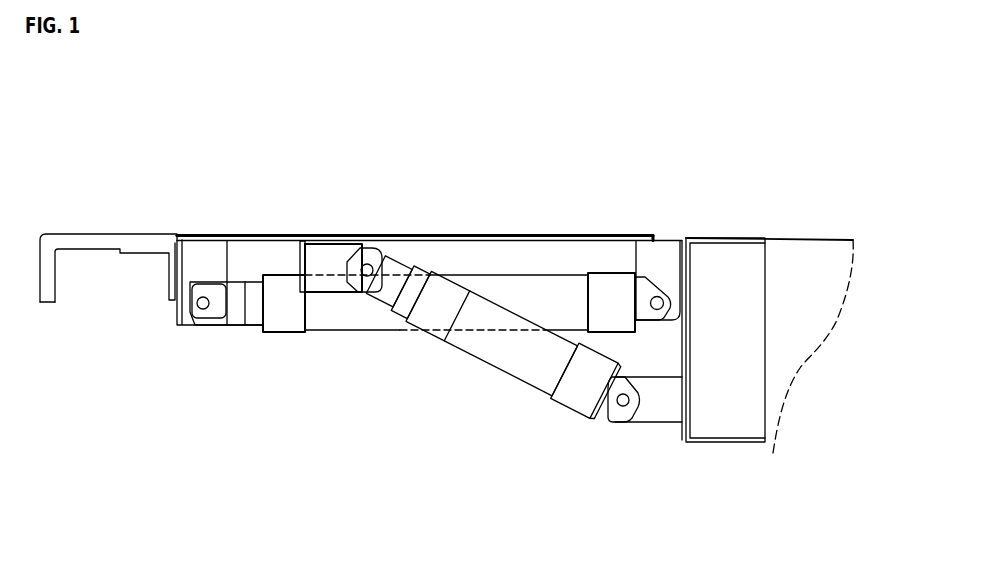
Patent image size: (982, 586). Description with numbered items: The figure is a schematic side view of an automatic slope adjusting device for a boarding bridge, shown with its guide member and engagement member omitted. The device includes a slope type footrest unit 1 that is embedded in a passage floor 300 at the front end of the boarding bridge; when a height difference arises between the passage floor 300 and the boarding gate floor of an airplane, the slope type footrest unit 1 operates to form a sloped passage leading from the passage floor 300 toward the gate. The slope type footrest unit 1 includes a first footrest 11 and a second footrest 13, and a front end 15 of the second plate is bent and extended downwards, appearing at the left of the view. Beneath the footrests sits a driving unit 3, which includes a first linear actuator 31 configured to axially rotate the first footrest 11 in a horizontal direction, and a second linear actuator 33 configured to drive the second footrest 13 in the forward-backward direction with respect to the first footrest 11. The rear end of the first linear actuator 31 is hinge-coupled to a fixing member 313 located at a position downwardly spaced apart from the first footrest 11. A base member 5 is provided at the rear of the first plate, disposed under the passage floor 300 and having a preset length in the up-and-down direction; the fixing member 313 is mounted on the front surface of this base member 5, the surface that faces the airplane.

The slope type footrest unit 1 is at (328, 128).
The first footrest 11 is at (320, 235).
The second footrest 13 is at (253, 235).
The front end 15 is at (47, 235).
The driving unit 3 is at (472, 403).
The first linear actuator 31 is at (483, 343).
The second linear actuator 33 is at (372, 322).
The fixing member 313 is at (628, 422).
The base member 5 is at (692, 318).
The passage floor 300 is at (820, 238).